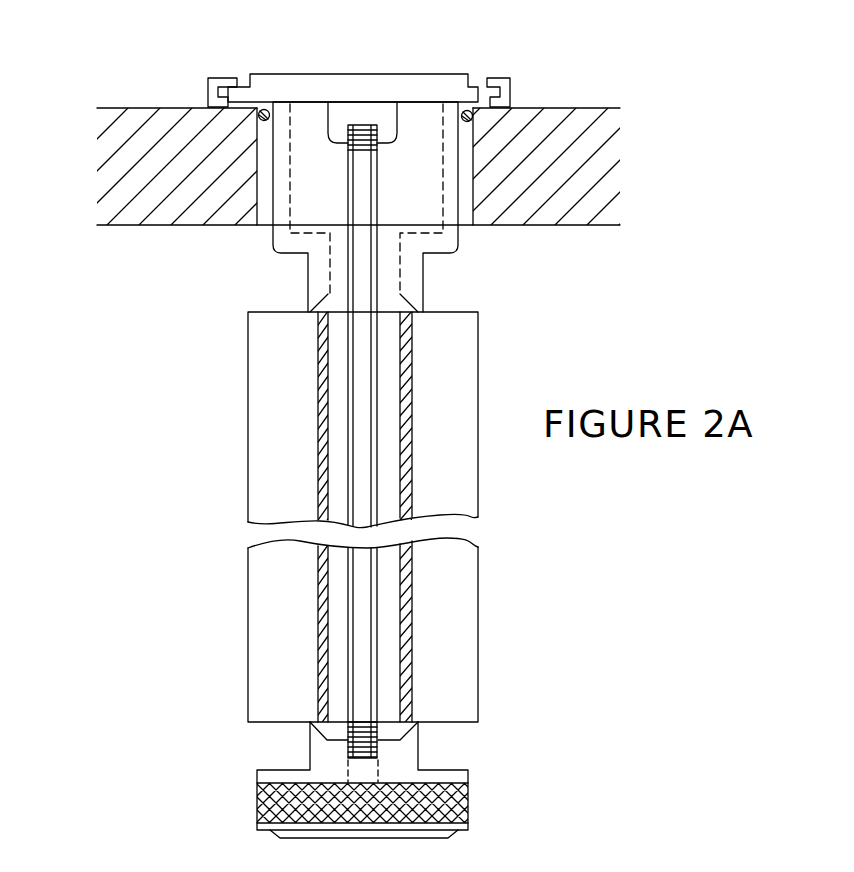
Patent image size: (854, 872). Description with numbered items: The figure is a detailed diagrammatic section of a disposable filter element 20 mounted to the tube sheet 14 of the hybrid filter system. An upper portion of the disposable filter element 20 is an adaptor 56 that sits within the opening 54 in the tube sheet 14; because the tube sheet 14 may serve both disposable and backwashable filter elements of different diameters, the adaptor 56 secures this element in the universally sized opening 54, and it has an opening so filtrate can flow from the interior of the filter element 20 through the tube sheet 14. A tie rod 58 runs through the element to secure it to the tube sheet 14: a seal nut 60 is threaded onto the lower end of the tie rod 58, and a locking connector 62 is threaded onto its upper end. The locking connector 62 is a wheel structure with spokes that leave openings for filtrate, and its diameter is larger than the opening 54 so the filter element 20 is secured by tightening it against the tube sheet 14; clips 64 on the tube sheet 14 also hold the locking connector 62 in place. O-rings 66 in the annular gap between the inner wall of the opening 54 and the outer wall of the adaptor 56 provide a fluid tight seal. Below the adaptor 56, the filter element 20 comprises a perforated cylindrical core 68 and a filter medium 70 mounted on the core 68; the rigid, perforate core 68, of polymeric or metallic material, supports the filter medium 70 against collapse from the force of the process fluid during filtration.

The tube sheet 14 is at (110, 108).
The disposable filter element 20 is at (197, 448).
The opening 54 is at (465, 222).
The adaptor 56 is at (273, 250).
The tie rod 58 is at (360, 337).
The seal nut 60 is at (255, 802).
The locking connector 62 is at (287, 95).
The clips 64 is at (212, 80).
The o-rings 66 is at (258, 114).
The perforated cylindrical core 68 is at (330, 678).
The filter medium 70 is at (260, 643).